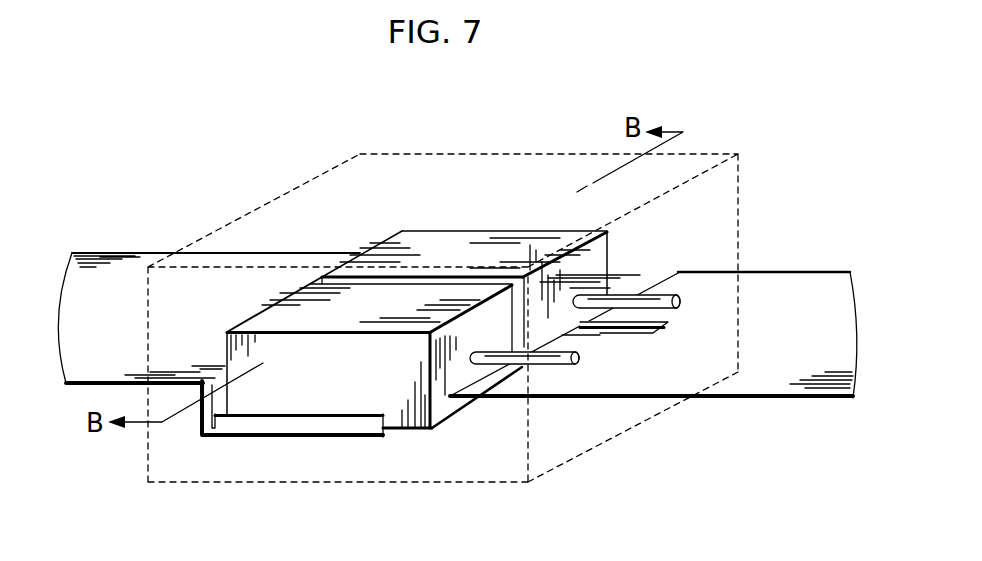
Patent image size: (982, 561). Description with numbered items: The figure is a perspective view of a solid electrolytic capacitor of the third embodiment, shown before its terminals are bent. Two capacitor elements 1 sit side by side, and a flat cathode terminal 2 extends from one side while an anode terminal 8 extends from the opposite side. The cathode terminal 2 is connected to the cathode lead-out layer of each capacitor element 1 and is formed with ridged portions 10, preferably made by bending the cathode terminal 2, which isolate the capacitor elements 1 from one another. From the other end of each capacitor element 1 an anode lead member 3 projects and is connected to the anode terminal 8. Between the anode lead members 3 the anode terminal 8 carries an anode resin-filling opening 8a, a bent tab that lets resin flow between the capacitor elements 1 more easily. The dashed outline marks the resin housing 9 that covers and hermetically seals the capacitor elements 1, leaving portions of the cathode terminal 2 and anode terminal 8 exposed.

The capacitor element 1 is at (458, 243).
The cathode terminal 2 is at (108, 275).
The anode lead member 3 is at (652, 296).
The anode terminal 8 is at (788, 291).
The anode resin-filling opening 8a is at (625, 334).
The housing 9 is at (733, 188).
The ridged portions 10 is at (253, 428).